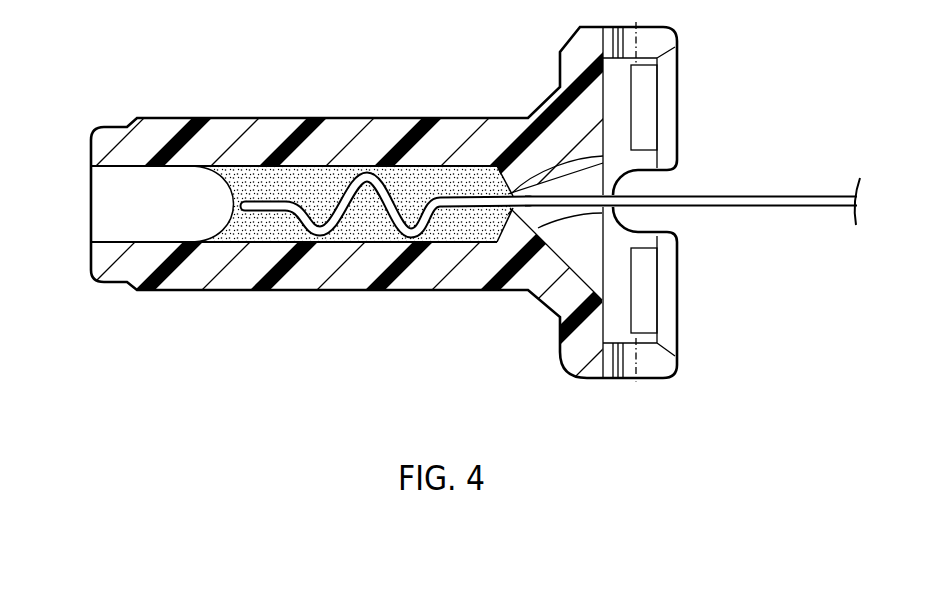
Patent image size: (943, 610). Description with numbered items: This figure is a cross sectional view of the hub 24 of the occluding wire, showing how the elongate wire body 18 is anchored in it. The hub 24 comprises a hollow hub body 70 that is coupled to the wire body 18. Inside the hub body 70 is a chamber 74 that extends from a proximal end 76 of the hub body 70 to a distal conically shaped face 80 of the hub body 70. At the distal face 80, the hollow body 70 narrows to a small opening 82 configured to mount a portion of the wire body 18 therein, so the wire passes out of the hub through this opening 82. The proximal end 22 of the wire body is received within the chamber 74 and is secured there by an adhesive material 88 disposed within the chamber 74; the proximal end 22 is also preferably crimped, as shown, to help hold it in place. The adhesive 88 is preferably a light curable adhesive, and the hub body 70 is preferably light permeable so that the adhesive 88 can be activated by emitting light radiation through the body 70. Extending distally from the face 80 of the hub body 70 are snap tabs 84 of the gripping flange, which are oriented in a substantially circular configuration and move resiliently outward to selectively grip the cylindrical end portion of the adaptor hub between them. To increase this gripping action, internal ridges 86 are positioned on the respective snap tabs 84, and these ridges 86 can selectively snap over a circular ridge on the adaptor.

The hub 24 is at (471, 210).
The hub body 70 is at (158, 121).
The proximal end of hub body 76 is at (90, 158).
The chamber 74 is at (150, 241).
The adhesive material 88 is at (270, 232).
The proximal end of wire body 22 is at (368, 170).
The elongate wire body 18 is at (760, 197).
The snap tabs 84 is at (660, 57).
The internal ridges 86 is at (660, 100).
The small opening 82 is at (603, 156).
The distal conically shaped face 80 is at (602, 213).